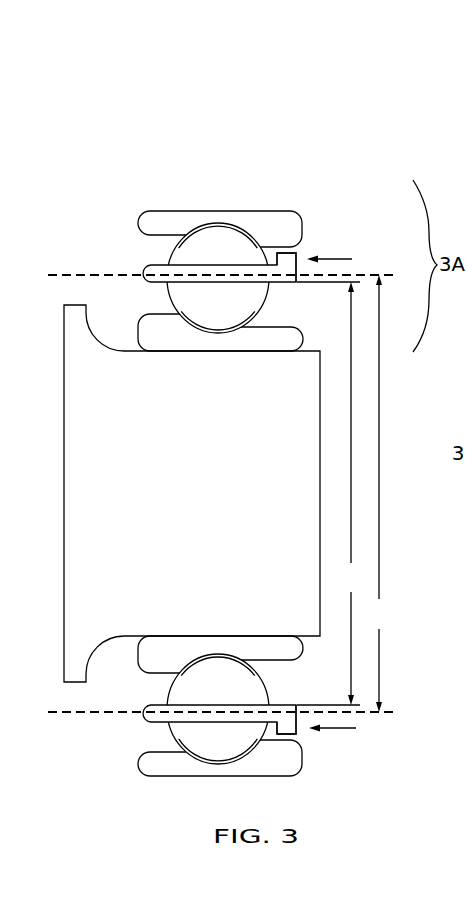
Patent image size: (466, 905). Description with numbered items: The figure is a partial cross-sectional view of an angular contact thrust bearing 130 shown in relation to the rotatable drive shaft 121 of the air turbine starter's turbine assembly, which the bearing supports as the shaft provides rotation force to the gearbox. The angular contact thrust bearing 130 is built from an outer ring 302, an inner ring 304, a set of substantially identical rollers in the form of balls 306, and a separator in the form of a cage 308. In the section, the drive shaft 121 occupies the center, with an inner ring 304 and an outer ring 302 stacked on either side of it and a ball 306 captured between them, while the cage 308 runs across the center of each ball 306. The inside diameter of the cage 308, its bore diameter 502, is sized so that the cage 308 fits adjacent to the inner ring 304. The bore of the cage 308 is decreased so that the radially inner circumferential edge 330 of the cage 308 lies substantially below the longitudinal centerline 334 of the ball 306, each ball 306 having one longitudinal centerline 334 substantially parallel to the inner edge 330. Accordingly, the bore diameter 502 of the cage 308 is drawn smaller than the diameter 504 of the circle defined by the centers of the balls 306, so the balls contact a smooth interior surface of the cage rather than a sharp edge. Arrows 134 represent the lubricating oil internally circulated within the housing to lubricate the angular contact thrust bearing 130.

The drive shaft 121 is at (219, 502).
The angular contact thrust bearing 130 is at (138, 181).
The oil 134 is at (326, 258).
The outer ring 302 is at (279, 217).
The inner ring 304 is at (168, 346).
The ball 306 is at (234, 309).
The cage 308 is at (146, 266).
The radially inner circumferential edge 330 is at (278, 284).
The longitudinal centerline 334 is at (72, 273).
The bore diameter 502 is at (333, 493).
The diameter 504 is at (385, 493).